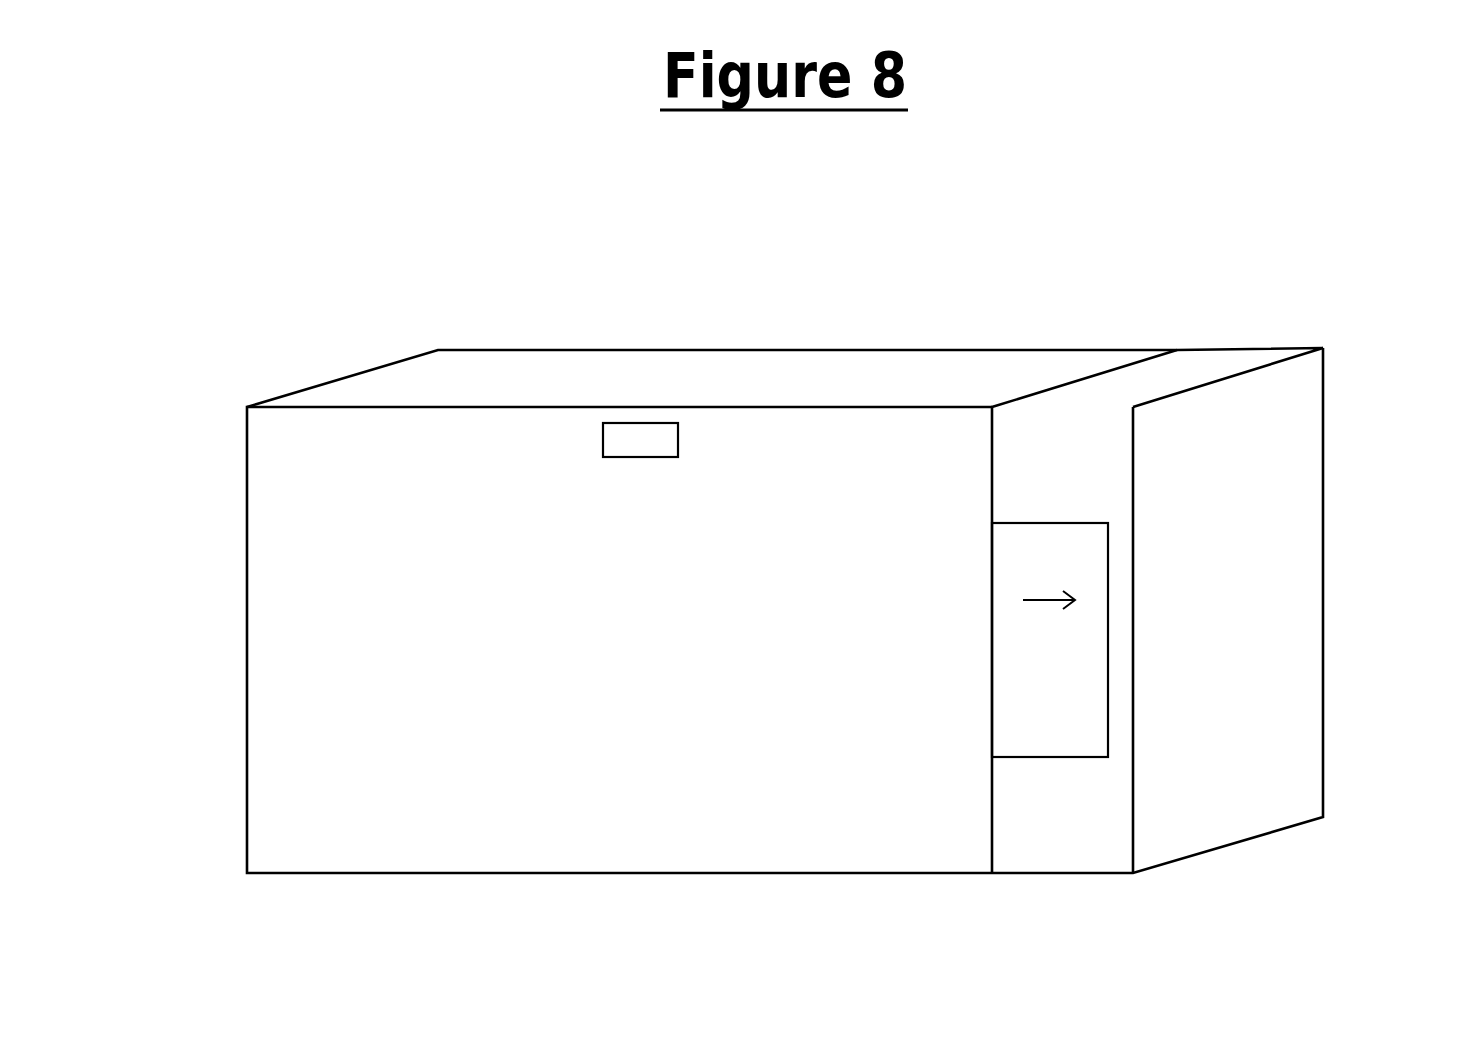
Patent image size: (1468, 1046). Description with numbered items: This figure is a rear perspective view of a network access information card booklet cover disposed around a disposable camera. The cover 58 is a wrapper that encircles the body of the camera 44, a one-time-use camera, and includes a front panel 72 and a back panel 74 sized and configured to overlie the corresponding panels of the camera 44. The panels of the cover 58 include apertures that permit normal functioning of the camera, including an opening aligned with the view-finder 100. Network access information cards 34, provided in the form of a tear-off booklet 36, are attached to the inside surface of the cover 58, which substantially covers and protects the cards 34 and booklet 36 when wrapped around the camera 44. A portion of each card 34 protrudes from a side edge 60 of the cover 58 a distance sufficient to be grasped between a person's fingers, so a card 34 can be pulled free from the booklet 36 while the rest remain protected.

The network access information card 34 is at (1105, 543).
The tear-off booklet 36 is at (1088, 688).
The camera 44 is at (1318, 782).
The cover 58 is at (932, 367).
The side edge 60 is at (990, 453).
The front panel 72 is at (290, 643).
The back panel 74 is at (430, 373).
The view-finder 100 is at (642, 442).